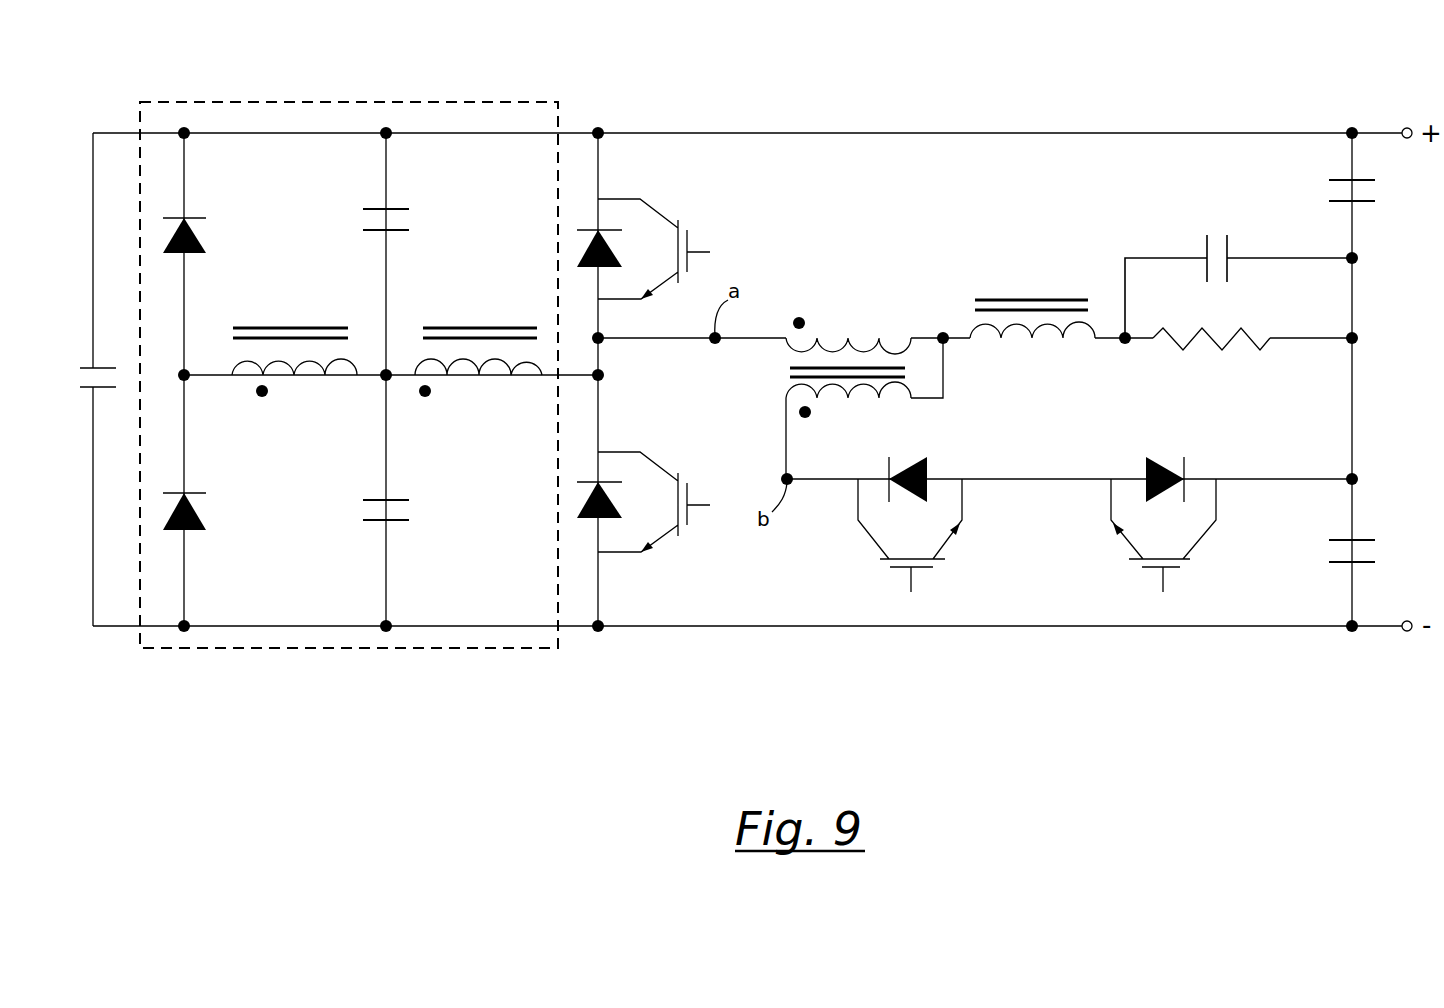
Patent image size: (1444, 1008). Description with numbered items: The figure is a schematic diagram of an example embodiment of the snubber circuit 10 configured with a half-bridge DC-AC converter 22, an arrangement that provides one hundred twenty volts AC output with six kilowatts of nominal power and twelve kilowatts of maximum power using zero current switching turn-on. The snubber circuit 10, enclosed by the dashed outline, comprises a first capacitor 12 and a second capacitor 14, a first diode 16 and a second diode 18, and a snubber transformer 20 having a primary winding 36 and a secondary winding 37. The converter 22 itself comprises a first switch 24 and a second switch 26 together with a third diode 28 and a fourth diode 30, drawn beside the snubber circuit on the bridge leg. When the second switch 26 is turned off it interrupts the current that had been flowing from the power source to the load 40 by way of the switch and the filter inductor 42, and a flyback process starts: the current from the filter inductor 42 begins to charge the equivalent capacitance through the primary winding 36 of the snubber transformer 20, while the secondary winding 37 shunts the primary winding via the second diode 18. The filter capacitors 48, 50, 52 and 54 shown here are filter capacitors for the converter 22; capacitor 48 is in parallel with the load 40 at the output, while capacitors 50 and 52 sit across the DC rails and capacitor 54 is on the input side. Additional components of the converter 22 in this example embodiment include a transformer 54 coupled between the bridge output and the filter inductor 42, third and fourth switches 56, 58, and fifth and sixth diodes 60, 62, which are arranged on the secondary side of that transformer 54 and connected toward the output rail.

The snubber circuit 10 is at (343, 102).
The first capacitor 12 is at (398, 208).
The second capacitor 14 is at (398, 500).
The first diode 16 is at (195, 217).
The second diode 18 is at (195, 492).
The snubber transformer 20 is at (357, 294).
The half-bridge DC-AC converter 22 is at (884, 66).
The first switch 24 is at (660, 210).
The second switch 26 is at (660, 461).
The third diode 28 is at (588, 230).
The fourth diode 30 is at (589, 482).
The primary winding 36 is at (509, 378).
The secondary winding 37 is at (321, 378).
The load 40 is at (1222, 352).
The filter inductor 42 is at (1029, 300).
The filter capacitor 48 is at (1204, 245).
The filter capacitor 50 is at (1362, 203).
The filter capacitor 52 is at (1362, 540).
The filter capacitor / transformer 54 is at (102, 368).
The third switch 56 is at (870, 540).
The fourth switch 58 is at (1201, 540).
The fifth diode 60 is at (889, 465).
The sixth diode 62 is at (1186, 463).